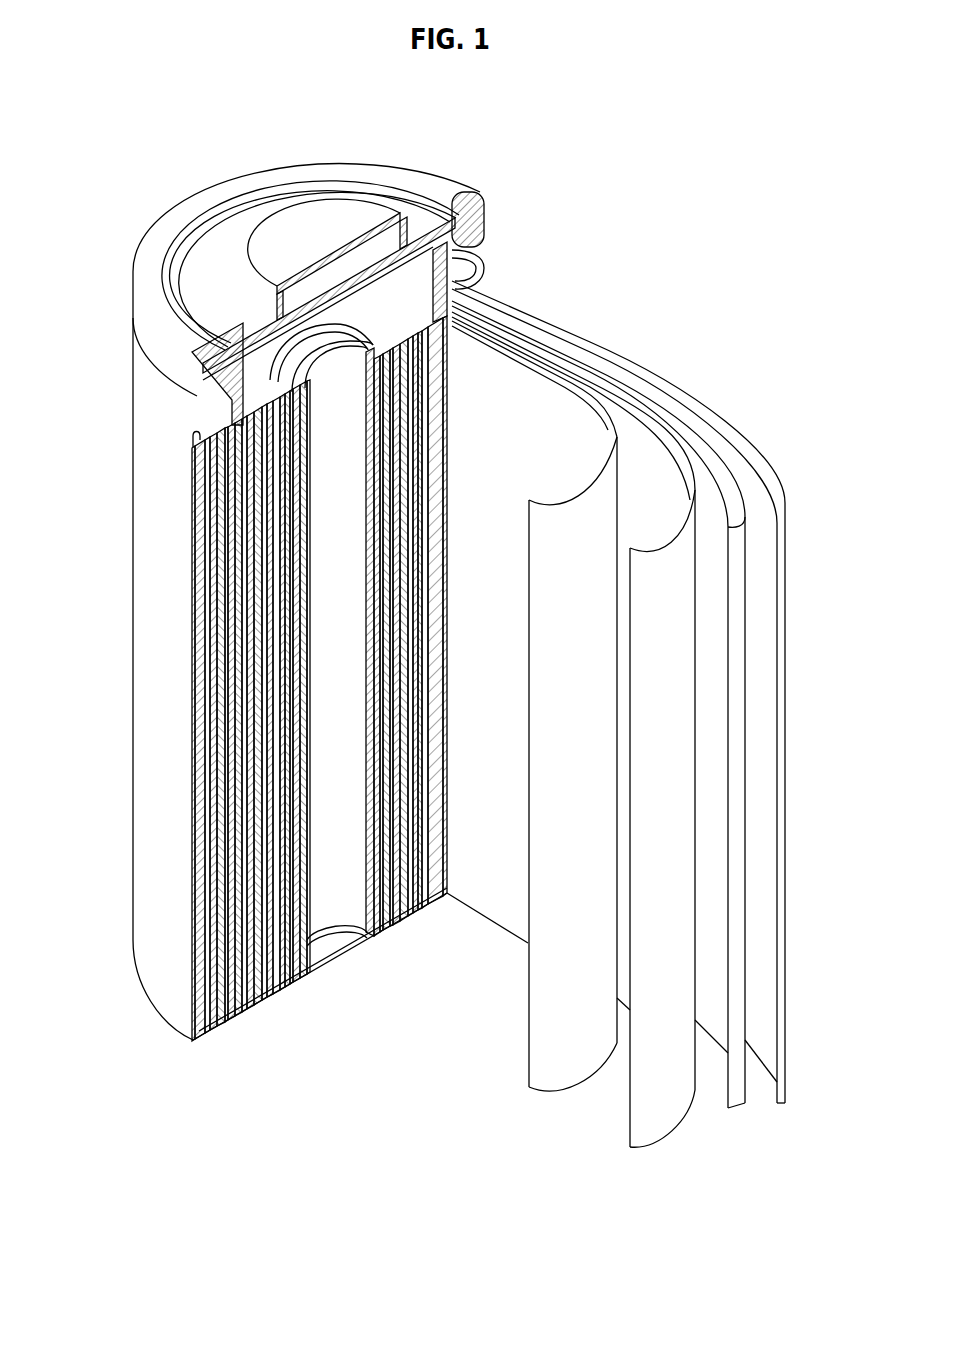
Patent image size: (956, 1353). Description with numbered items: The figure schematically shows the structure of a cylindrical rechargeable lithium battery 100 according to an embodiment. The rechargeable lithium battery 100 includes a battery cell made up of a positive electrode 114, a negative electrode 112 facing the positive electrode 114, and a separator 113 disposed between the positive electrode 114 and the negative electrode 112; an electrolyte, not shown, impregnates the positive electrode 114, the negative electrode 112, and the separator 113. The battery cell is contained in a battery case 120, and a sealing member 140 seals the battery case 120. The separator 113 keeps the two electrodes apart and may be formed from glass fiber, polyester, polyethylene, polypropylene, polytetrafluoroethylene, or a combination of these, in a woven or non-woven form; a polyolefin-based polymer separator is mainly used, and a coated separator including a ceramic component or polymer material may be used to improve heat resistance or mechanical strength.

The rechargeable lithium battery 100 is at (482, 150).
The negative electrode 112 is at (750, 450).
The separator 113 is at (502, 357).
The positive electrode 114 is at (632, 422).
The battery case 120 is at (135, 651).
The sealing member 140 is at (291, 217).